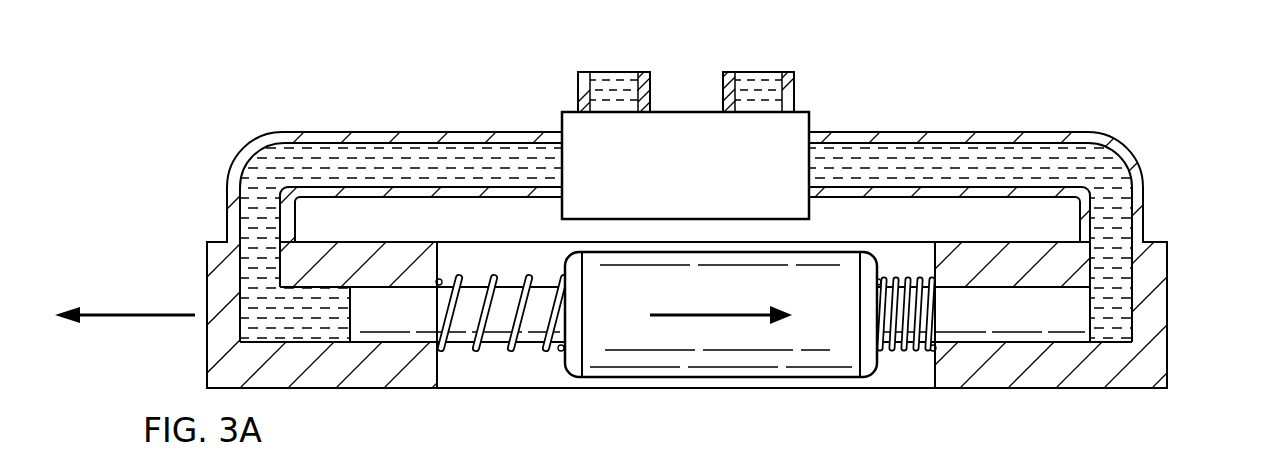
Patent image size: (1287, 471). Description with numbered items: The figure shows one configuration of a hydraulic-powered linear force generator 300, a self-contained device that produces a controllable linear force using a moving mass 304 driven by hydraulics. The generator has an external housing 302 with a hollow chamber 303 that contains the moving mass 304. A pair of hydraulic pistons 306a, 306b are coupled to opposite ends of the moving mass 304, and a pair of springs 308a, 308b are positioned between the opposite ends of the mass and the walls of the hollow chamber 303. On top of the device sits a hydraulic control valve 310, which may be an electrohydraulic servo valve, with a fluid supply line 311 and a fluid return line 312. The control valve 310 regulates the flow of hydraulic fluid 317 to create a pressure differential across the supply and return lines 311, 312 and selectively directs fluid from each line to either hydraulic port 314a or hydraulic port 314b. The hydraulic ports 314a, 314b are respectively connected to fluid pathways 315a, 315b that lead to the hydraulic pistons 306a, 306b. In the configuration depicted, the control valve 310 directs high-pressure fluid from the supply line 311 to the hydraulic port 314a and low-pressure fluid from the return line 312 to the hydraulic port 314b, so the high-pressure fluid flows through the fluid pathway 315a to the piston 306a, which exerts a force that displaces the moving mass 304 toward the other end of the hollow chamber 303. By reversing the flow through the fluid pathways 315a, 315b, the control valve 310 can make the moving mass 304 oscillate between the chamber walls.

The linear force generator 300 is at (270, 82).
The external housing 302 is at (1157, 279).
The hollow chamber 303 is at (542, 372).
The moving mass 304 is at (722, 377).
The hydraulic piston 306a is at (362, 318).
The hydraulic piston 306b is at (1073, 318).
The spring 308a is at (483, 350).
The spring 308b is at (902, 352).
The hydraulic control valve 310 is at (695, 112).
The fluid supply line 311 is at (612, 72).
The fluid return line 312 is at (757, 72).
The hydraulic port 314a is at (558, 163).
The hydraulic port 314b is at (813, 163).
The hydraulic fluid pathway 315a is at (437, 142).
The hydraulic fluid pathway 315b is at (965, 140).
The hydraulic fluid 317 is at (342, 160).